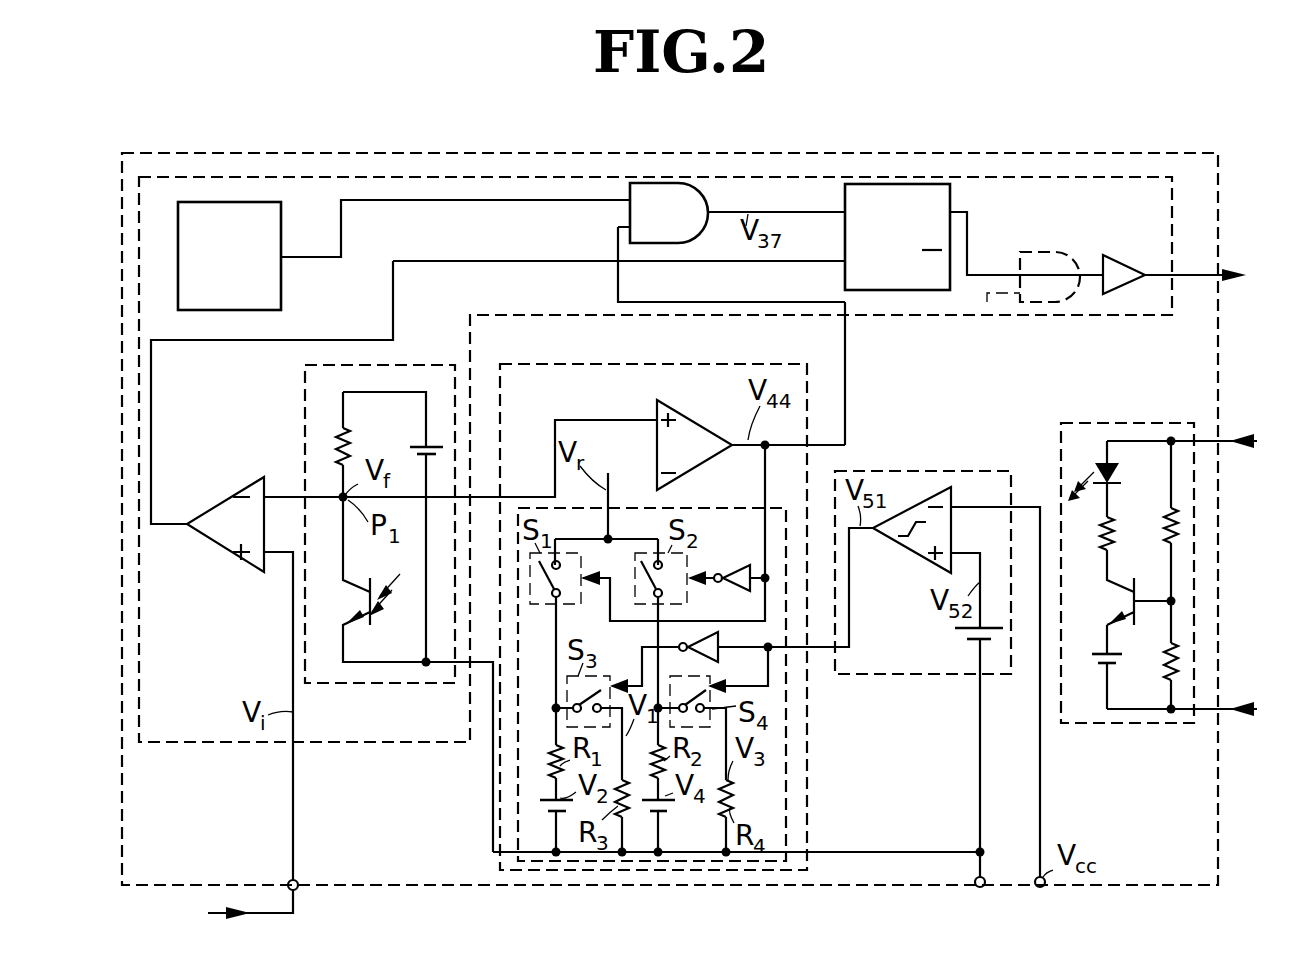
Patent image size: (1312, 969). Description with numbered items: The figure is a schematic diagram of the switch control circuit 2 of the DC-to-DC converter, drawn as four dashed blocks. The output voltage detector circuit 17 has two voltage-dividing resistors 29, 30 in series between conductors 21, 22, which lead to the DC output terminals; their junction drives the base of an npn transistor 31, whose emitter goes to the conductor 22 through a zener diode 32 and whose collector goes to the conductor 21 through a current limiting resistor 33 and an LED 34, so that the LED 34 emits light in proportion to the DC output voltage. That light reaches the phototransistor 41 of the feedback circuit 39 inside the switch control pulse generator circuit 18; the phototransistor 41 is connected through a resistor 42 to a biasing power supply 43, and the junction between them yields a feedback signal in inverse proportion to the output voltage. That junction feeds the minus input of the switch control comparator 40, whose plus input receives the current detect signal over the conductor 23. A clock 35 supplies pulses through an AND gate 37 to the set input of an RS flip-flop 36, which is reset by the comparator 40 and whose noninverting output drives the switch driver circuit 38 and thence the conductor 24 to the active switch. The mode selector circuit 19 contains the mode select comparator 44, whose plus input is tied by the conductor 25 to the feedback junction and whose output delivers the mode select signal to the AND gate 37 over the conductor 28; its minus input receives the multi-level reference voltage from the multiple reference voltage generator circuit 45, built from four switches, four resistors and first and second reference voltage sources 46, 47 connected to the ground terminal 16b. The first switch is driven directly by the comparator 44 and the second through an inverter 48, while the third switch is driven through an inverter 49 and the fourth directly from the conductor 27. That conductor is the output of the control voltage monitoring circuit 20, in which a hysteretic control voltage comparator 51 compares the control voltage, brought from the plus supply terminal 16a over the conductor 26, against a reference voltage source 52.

The switch control circuit 2 is at (1220, 208).
The plus supply terminal 16a is at (1040, 890).
The ground terminal 16b is at (977, 890).
The output voltage detector circuit 17 is at (1092, 423).
The switch control pulse generator circuit 18 is at (1124, 318).
The mode selector circuit 19 is at (625, 366).
The control voltage monitoring circuit 20 is at (926, 471).
The conductor 21 is at (1222, 441).
The conductor 22 is at (1240, 709).
The conductor 23 is at (299, 905).
The conductor 24 is at (1220, 272).
The conductor 25 is at (512, 490).
The conductor 26 is at (1040, 704).
The conductor 27 is at (828, 652).
The conductor 28 is at (848, 340).
The voltage-dividing resistor 29 is at (1166, 523).
The voltage-dividing resistor 30 is at (1168, 665).
The npn transistor 31 is at (1120, 591).
The zener diode 32 is at (1101, 676).
The current limiting resistor 33 is at (1100, 530).
The LED 34 is at (1118, 470).
The clock 35 is at (283, 255).
The RS flip-flop 36 is at (952, 210).
The AND gate 37 is at (630, 215).
The switch driver circuit 38 is at (1124, 255).
The feedback circuit 39 is at (305, 440).
The switch control comparator 40 is at (226, 575).
The phototransistor 41 is at (374, 584).
The resistor 42 is at (340, 425).
The biasing power supply 43 is at (416, 446).
The mode select comparator 44 is at (693, 419).
The multiple reference voltage generator circuit 45 is at (722, 508).
The first reference voltage source 46 is at (547, 780).
The second reference voltage source 47 is at (660, 812).
The inverter 48 is at (740, 564).
The inverter 49 is at (722, 660).
The control voltage comparator 51 is at (896, 550).
The reference voltage source 52 is at (960, 628).